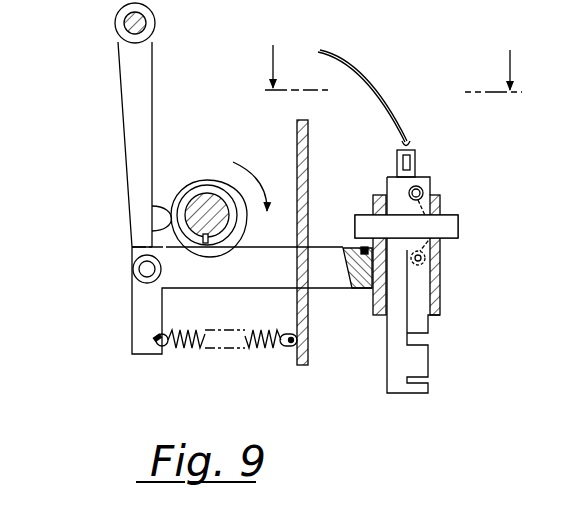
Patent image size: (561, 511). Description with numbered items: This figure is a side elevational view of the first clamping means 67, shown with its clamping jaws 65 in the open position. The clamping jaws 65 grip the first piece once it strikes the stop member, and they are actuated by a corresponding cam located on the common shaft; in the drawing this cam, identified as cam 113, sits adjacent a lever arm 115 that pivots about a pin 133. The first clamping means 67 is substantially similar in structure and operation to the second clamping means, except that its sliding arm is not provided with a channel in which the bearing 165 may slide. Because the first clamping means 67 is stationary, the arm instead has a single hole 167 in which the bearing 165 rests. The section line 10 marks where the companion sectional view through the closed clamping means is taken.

The section line 10- 10 is at (394, 79).
The clamping jaws 65 is at (436, 340).
The first clamping means 67 is at (468, 189).
The cam 113 is at (206, 181).
The lever arm 115 is at (123, 125).
The pivot pin 133 is at (122, 17).
The bearing 165 is at (358, 272).
The single hole 167 is at (360, 250).